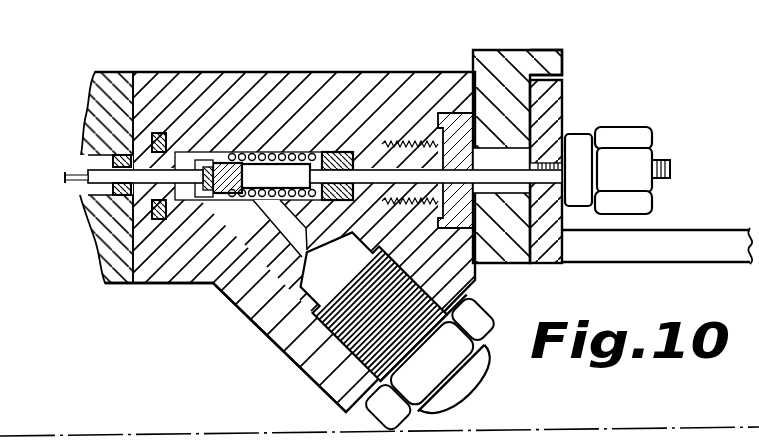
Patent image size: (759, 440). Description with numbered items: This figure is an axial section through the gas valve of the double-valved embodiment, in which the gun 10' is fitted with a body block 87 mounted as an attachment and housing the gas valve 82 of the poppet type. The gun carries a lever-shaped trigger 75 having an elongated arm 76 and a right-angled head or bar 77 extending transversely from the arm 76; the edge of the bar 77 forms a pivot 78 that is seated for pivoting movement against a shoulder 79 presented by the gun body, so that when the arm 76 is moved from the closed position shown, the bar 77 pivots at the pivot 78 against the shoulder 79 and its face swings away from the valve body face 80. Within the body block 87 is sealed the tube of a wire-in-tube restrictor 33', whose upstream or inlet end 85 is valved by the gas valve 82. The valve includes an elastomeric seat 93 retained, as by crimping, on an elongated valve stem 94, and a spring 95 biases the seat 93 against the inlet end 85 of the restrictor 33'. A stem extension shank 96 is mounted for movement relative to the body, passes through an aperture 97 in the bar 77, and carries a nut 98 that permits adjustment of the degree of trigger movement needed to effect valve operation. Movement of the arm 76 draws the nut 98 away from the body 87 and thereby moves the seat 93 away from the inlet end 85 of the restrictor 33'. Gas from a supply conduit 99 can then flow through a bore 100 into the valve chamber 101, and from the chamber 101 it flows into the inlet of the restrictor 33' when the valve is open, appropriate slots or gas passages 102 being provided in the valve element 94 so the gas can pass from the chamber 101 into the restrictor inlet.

The body block 87 is at (194, 73).
The inlet end of the gas flow restrictor 85 is at (176, 173).
The elastomeric seat 93 is at (214, 160).
The valve stem 94 is at (276, 160).
The spring 95 is at (323, 150).
The stem extension shank 96 is at (366, 165).
The valve body face 80 is at (506, 80).
The shoulder 79 is at (563, 53).
The pivot 78 is at (563, 92).
The bar 77 is at (567, 132).
The aperture 97 is at (546, 155).
The gas valve 82 is at (667, 132).
The nut 98 is at (633, 167).
The trigger 75 is at (695, 245).
The arm 76 is at (662, 250).
The supply conduit 99 is at (481, 373).
The bore 100 is at (292, 257).
The valve chamber 101 is at (247, 205).
The gas passages 102 is at (216, 235).
The wire-in-tube restrictor 33' is at (291, 205).
The gun 10' is at (379, 415).